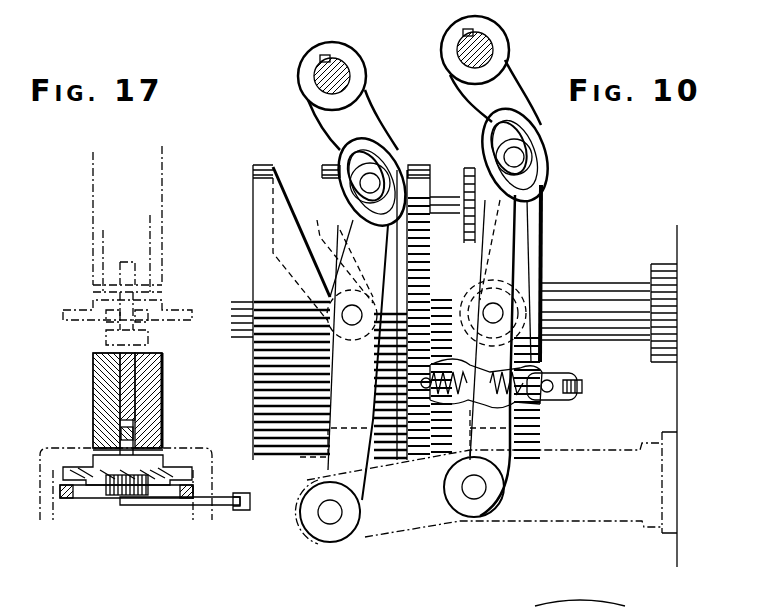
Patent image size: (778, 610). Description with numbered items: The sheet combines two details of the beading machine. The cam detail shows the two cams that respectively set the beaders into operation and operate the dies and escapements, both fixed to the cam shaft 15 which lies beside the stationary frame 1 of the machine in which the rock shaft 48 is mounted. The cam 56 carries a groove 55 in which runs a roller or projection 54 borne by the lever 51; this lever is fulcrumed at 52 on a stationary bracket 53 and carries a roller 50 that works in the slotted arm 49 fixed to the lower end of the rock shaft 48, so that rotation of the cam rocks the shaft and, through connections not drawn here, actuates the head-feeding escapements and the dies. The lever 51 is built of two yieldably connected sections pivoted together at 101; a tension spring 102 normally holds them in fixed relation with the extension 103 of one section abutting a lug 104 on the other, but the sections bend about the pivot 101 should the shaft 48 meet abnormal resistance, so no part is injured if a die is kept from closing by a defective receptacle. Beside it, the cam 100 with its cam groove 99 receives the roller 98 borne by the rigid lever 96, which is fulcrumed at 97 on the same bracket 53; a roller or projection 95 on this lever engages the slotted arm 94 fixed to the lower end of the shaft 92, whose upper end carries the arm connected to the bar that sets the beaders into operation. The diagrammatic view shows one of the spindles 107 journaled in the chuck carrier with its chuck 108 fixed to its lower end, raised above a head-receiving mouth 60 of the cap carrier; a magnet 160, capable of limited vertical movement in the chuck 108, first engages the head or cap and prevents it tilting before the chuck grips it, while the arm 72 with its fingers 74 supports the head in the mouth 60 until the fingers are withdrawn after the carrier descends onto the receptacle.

In FIG. 10, the frame 1 is at (680, 413).
In FIG. 10, the cam shaft 15 is at (603, 290).
In FIG. 10, the rock shaft 48 is at (492, 55).
In FIG. 10, the slotted arm 49 is at (507, 105).
In FIG. 10, the roller 50 is at (525, 160).
In FIG. 10, the lever 51 is at (505, 463).
In FIG. 10, the fulcrum 52 is at (476, 492).
In FIG. 10, the stationary bracket 53 is at (556, 523).
In FIG. 10, the roller 54 is at (505, 300).
In FIG. 10, the groove 55 is at (424, 312).
In FIG. 10, the cam 56 is at (536, 248).
In FIG. 17, the mouth 60 is at (195, 448).
In FIG. 10, the mouth 60 is at (604, 604).
In FIG. 17, the arm 72 is at (243, 511).
In FIG. 17, the fingers 74 is at (167, 505).
In FIG. 10, the shaft 92 is at (346, 75).
In FIG. 10, the arm 94 is at (362, 125).
In FIG. 10, the roller 95 is at (382, 178).
In FIG. 10, the lever 96 is at (312, 470).
In FIG. 10, the fulcrum 97 is at (330, 515).
In FIG. 10, the roller 98 is at (352, 330).
In FIG. 10, the cam groove 99 is at (288, 185).
In FIG. 10, the cam 100 is at (258, 400).
In FIG. 10, the pivot 101 is at (497, 320).
In FIG. 10, the tension spring 102 is at (540, 392).
In FIG. 10, the extension 103 is at (507, 362).
In FIG. 10, the lug 104 is at (465, 440).
In FIG. 17, the spindle 107 is at (152, 230).
In FIG. 17, the chuck 108 is at (75, 320).
In FIG. 17, the magnet 160 is at (150, 338).